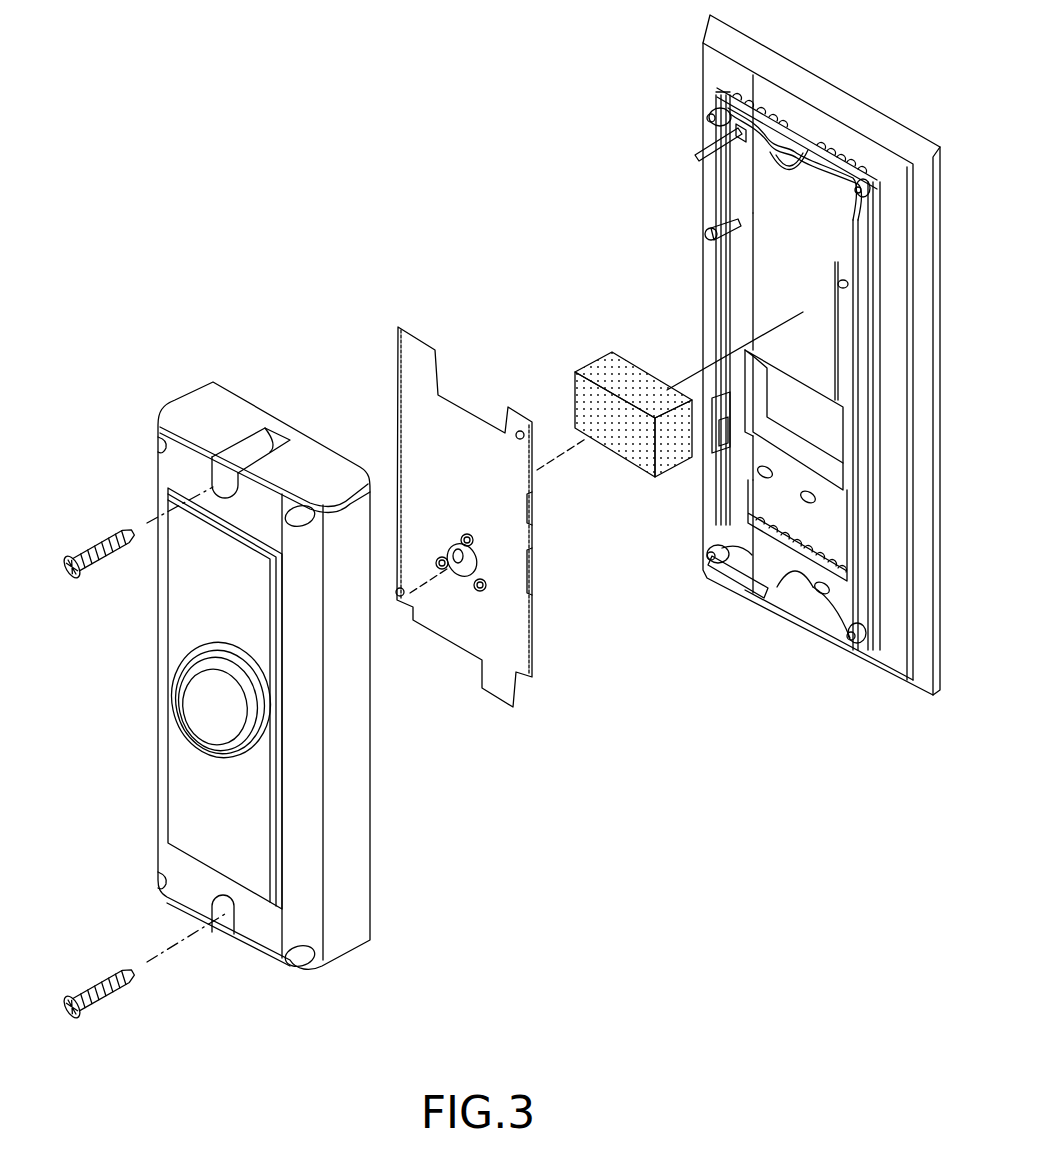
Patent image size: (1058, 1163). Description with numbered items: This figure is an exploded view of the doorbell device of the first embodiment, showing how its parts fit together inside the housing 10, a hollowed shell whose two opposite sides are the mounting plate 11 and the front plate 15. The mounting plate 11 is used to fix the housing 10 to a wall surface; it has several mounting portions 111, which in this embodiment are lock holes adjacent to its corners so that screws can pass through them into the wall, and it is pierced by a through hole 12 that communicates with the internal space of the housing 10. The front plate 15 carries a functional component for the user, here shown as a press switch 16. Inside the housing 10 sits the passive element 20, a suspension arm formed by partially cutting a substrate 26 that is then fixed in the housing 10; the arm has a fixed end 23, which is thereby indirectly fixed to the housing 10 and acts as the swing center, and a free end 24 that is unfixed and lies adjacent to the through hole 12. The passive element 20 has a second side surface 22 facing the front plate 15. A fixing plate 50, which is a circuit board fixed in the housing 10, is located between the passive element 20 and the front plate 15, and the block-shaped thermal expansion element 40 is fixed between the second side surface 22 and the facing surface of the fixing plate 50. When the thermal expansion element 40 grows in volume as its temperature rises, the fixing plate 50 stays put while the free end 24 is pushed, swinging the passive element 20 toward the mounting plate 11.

The housing 10 is at (176, 395).
The mounting plate 11 is at (702, 92).
The mounting portion 111 is at (703, 120).
The through hole 12 is at (767, 423).
The front plate 15 is at (183, 465).
The press switch 16 is at (213, 706).
The passive element 20 is at (757, 319).
The second side surface 22 is at (782, 282).
The fixed end 23 is at (752, 213).
The free end 24 is at (767, 368).
The substrate 26 is at (740, 172).
The thermal expansion element 40 is at (582, 360).
The fixing plate 50 is at (397, 368).